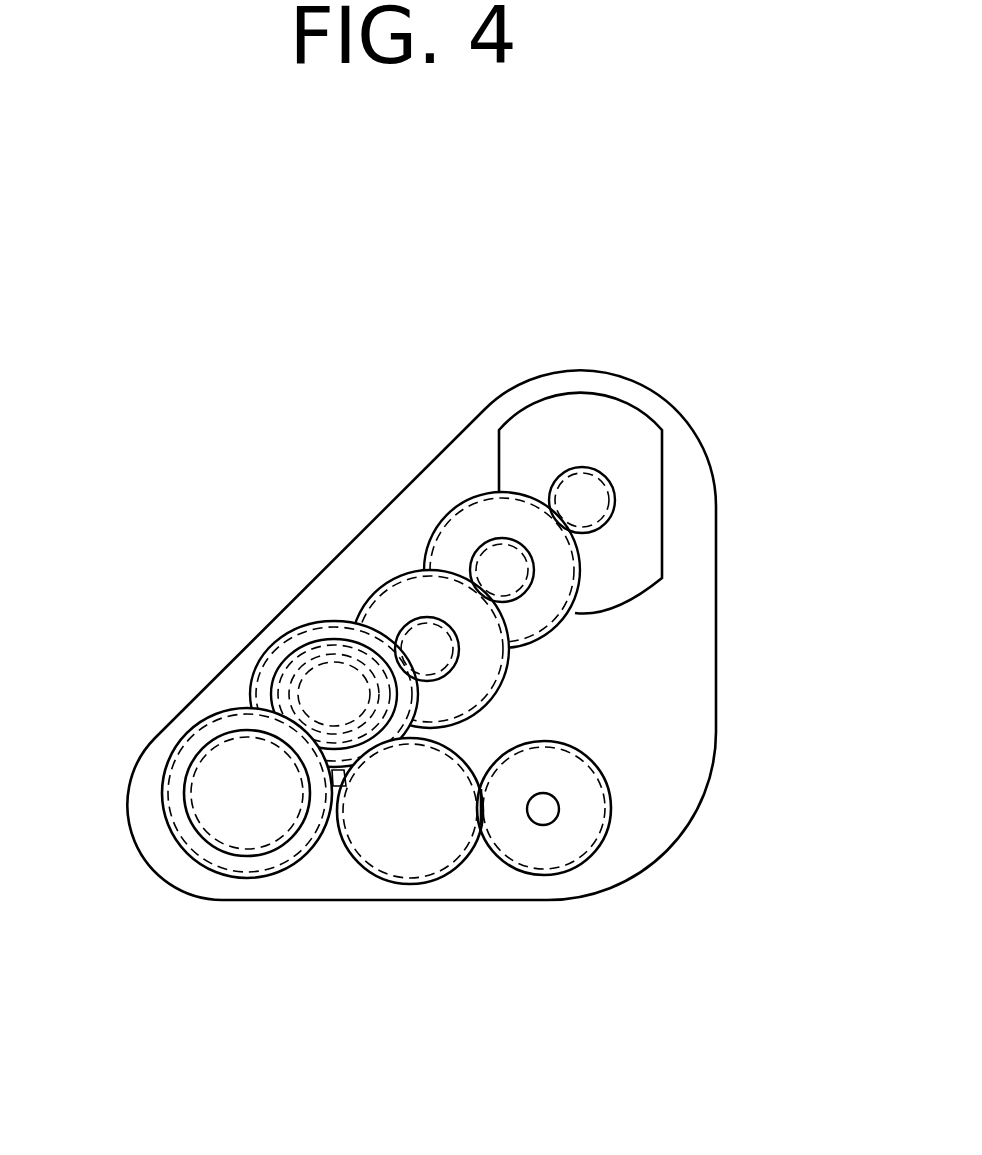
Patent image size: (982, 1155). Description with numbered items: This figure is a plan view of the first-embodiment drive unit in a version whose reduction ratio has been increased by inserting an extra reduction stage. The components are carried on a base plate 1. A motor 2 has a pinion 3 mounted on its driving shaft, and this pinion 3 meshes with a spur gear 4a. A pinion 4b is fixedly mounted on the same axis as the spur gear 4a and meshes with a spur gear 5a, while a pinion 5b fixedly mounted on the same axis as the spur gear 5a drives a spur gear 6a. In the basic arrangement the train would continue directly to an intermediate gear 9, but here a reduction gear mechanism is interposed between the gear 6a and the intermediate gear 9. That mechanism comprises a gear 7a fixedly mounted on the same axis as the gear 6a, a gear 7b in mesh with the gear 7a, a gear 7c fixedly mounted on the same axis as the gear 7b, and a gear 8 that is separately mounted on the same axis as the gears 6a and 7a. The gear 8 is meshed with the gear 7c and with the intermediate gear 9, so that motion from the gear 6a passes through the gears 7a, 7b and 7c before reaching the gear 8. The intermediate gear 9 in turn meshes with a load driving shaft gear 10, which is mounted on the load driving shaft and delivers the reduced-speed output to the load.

The base plate 1 is at (697, 468).
The motor 2 is at (637, 427).
The pinion 3 is at (560, 475).
The spur gear 4a is at (570, 618).
The pinion 4b is at (515, 600).
The spur gear 5a is at (360, 600).
The pinion 5b is at (410, 618).
The spur gear 6a is at (277, 641).
The gear 7a is at (250, 691).
The gear 7b is at (163, 808).
The gear 7c is at (237, 856).
The gear 8 is at (335, 788).
The intermediate gear 9 is at (430, 882).
The load driving shaft gear 10 is at (556, 876).